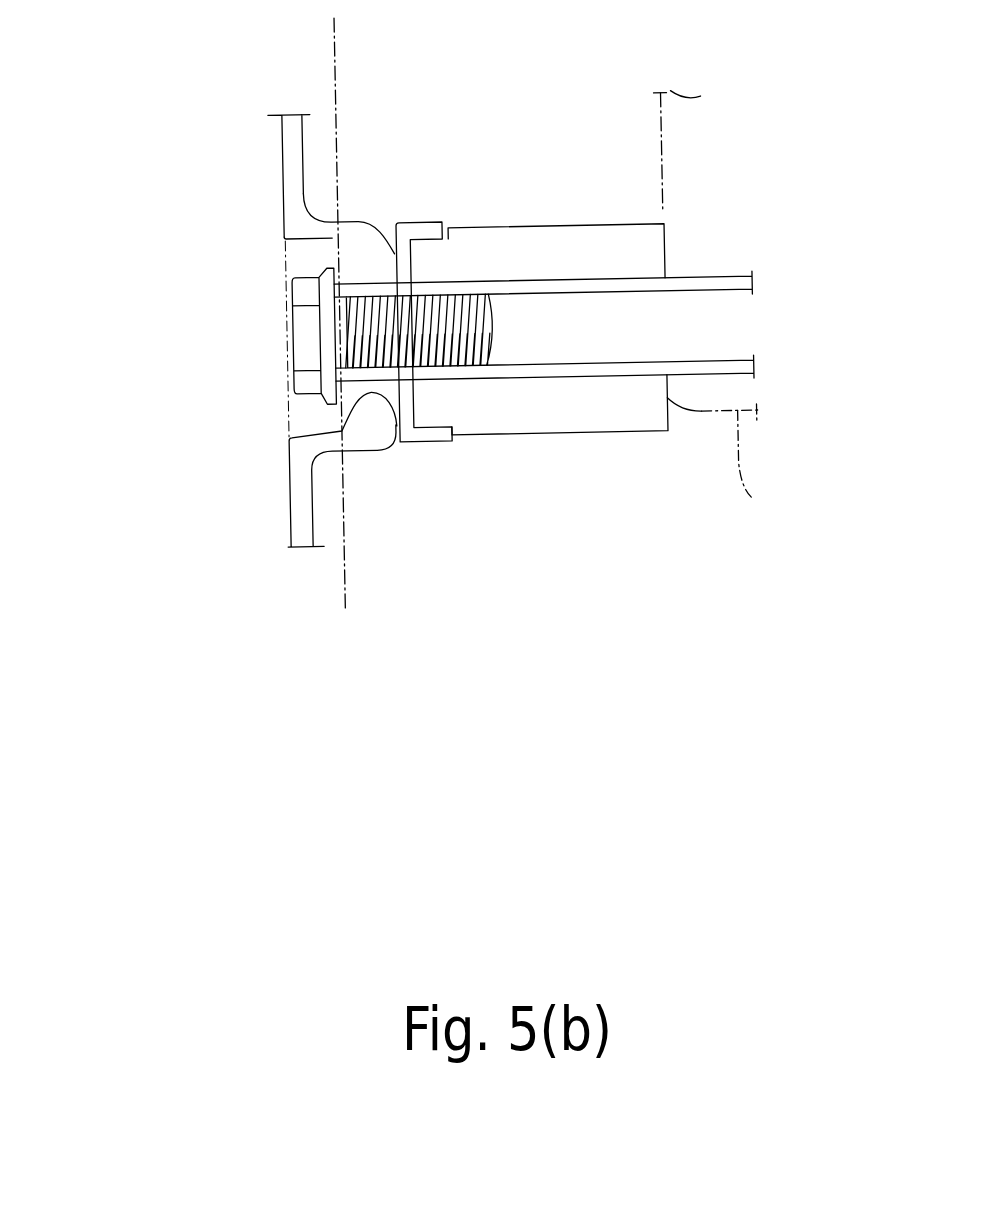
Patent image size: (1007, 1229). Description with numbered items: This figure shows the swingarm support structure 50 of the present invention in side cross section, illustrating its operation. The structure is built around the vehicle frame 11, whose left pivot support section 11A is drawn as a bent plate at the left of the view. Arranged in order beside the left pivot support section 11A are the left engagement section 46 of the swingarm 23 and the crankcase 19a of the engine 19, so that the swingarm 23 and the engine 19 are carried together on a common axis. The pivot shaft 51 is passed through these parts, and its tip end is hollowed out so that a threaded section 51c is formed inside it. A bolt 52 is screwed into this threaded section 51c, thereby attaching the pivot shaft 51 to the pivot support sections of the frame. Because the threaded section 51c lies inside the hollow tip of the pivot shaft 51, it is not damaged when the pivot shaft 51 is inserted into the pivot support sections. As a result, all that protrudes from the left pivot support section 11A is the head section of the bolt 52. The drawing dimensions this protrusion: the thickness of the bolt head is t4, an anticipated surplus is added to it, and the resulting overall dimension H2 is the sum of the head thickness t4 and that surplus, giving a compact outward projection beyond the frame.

The vehicle frame 11 is at (215, 142).
The left pivot support section 11A is at (332, 255).
The bolt 52 is at (292, 291).
The swingarm support structure 50 is at (723, 145).
The pivot shaft 51 is at (718, 277).
The threaded section 51c is at (455, 357).
The swingarm 23 is at (488, 212).
The left engagement section 46 is at (588, 225).
The engine 19 is at (712, 422).
The crankcase 19a is at (748, 475).
The thickness of the head section of the bolt t4 is at (398, 444).
The protrusion dimension H2 is at (373, 602).